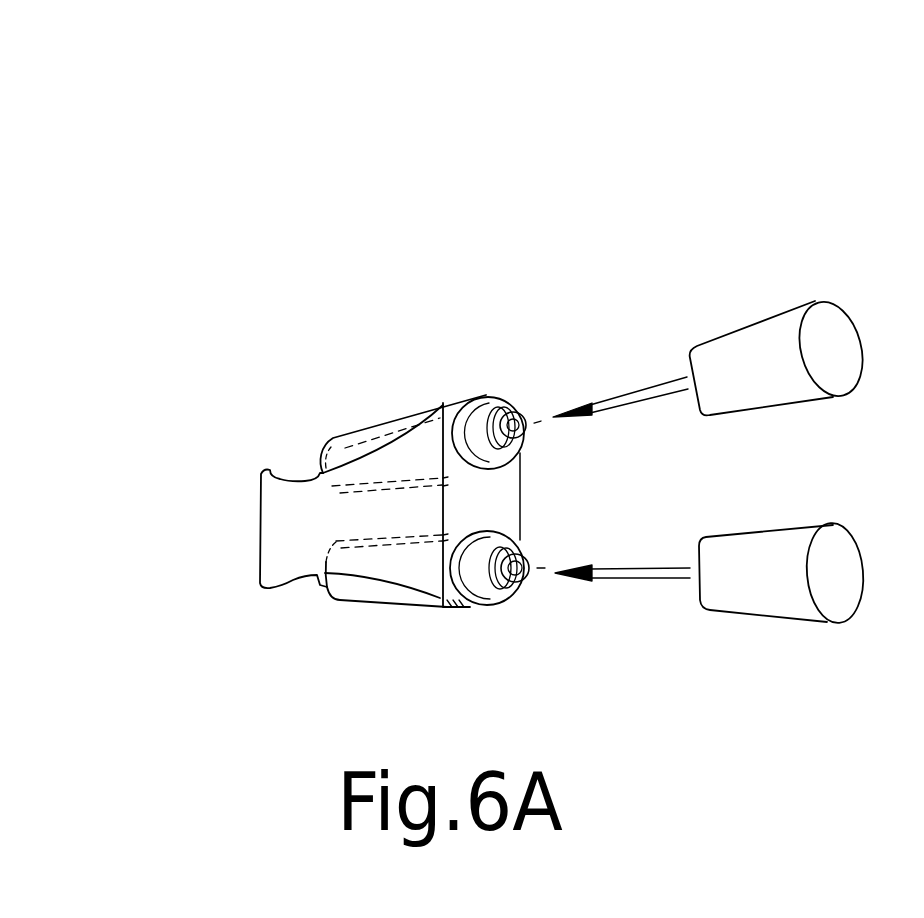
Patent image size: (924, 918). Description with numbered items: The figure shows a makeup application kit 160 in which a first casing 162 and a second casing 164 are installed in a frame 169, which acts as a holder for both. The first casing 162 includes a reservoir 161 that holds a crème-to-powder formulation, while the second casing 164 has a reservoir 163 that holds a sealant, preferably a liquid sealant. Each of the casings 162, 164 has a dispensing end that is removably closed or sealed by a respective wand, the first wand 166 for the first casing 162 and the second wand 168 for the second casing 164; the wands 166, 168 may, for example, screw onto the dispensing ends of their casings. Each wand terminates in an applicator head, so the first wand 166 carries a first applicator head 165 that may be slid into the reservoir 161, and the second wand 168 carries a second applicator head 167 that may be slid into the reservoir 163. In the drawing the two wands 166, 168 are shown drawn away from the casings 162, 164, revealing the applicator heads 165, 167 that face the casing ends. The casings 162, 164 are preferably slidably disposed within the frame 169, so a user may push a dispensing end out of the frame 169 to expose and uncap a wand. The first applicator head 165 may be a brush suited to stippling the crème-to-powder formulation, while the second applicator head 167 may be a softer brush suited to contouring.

The kit 160 is at (530, 255).
The reservoir 161 is at (377, 595).
The first casing 162 is at (350, 600).
The reservoir 163 is at (373, 433).
The second casing 164 is at (333, 442).
The first applicator head 165 is at (571, 580).
The first wand 166 is at (768, 640).
The second applicator head 167 is at (572, 408).
The second wand 168 is at (757, 310).
The frame 169 is at (260, 533).